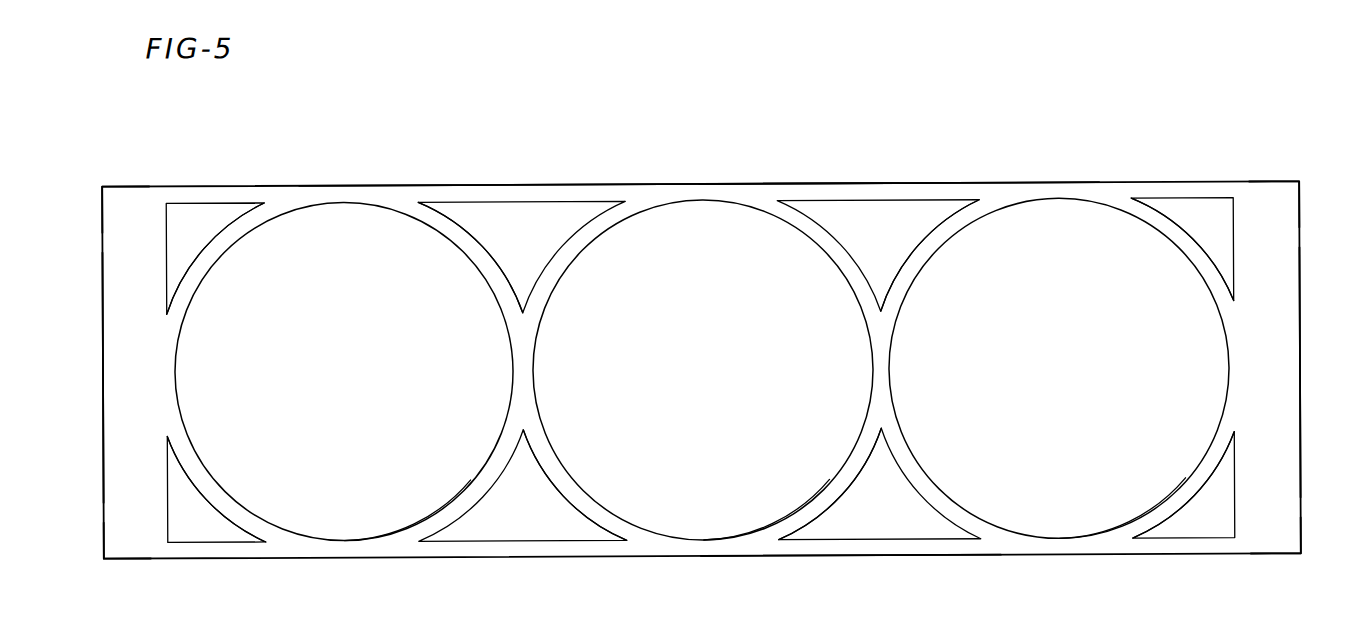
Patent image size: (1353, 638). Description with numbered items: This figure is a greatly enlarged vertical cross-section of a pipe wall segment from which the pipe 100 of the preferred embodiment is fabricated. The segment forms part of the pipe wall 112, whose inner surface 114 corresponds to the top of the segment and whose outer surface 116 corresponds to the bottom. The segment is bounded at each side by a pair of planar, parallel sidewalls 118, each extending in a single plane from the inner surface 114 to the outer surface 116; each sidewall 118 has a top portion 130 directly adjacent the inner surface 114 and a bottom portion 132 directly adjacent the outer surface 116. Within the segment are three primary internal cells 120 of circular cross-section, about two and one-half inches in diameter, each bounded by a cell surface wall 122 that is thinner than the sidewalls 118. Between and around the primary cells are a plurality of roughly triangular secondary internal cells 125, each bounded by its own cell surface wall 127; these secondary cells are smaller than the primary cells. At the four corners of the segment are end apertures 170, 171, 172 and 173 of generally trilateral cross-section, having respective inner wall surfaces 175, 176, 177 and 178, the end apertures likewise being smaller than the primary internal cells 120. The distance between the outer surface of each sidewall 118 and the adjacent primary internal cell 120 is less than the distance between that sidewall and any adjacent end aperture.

The pipe 100 is at (428, 178).
The wall 112 is at (592, 178).
The inner surface 114 is at (881, 182).
The outer surface 116 is at (845, 556).
The sidewall 118 is at (103, 428).
The primary internal cell 120 is at (345, 227).
The cell surface wall 122 is at (379, 528).
The secondary internal cell 125 is at (548, 238).
The cell surface wall 127 is at (506, 212).
The top portion 130 is at (103, 186).
The bottom portion 132 is at (103, 557).
The end aperture 170 is at (214, 214).
The end aperture 171 is at (202, 523).
The end aperture 172 is at (1185, 207).
The end aperture 173 is at (1183, 522).
The inner wall surface 175 is at (200, 238).
The inner wall surface 176 is at (236, 540).
The inner wall surface 177 is at (1198, 243).
The inner wall surface 178 is at (1210, 535).